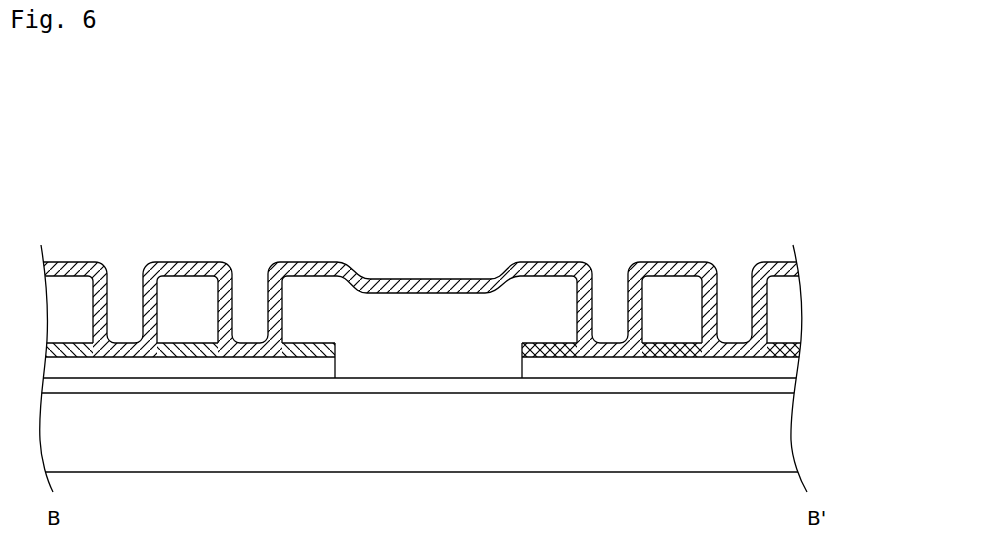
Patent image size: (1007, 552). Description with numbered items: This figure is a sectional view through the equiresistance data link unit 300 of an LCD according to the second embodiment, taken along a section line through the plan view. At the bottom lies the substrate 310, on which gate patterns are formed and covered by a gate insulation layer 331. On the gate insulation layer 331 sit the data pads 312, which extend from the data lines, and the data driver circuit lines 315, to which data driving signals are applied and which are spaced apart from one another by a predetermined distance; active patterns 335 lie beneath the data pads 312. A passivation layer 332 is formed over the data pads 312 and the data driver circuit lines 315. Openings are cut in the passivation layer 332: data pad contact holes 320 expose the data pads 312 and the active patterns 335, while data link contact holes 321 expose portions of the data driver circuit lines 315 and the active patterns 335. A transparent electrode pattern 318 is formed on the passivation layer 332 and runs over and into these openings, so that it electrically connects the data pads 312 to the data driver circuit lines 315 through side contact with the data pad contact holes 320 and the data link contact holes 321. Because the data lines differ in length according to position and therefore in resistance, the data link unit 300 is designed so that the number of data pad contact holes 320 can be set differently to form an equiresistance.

The data link unit 300 is at (491, 153).
The substrate 310 is at (438, 449).
The data pad 312 is at (553, 350).
The data driver circuit line 315 is at (318, 350).
The transparent electrode pattern 318 is at (397, 287).
The data pad contact hole 320 is at (605, 262).
The data link contact hole 321 is at (120, 261).
The gate insulation layer 331 is at (782, 386).
The passivation layer 332 is at (787, 310).
The active pattern 335 is at (787, 370).